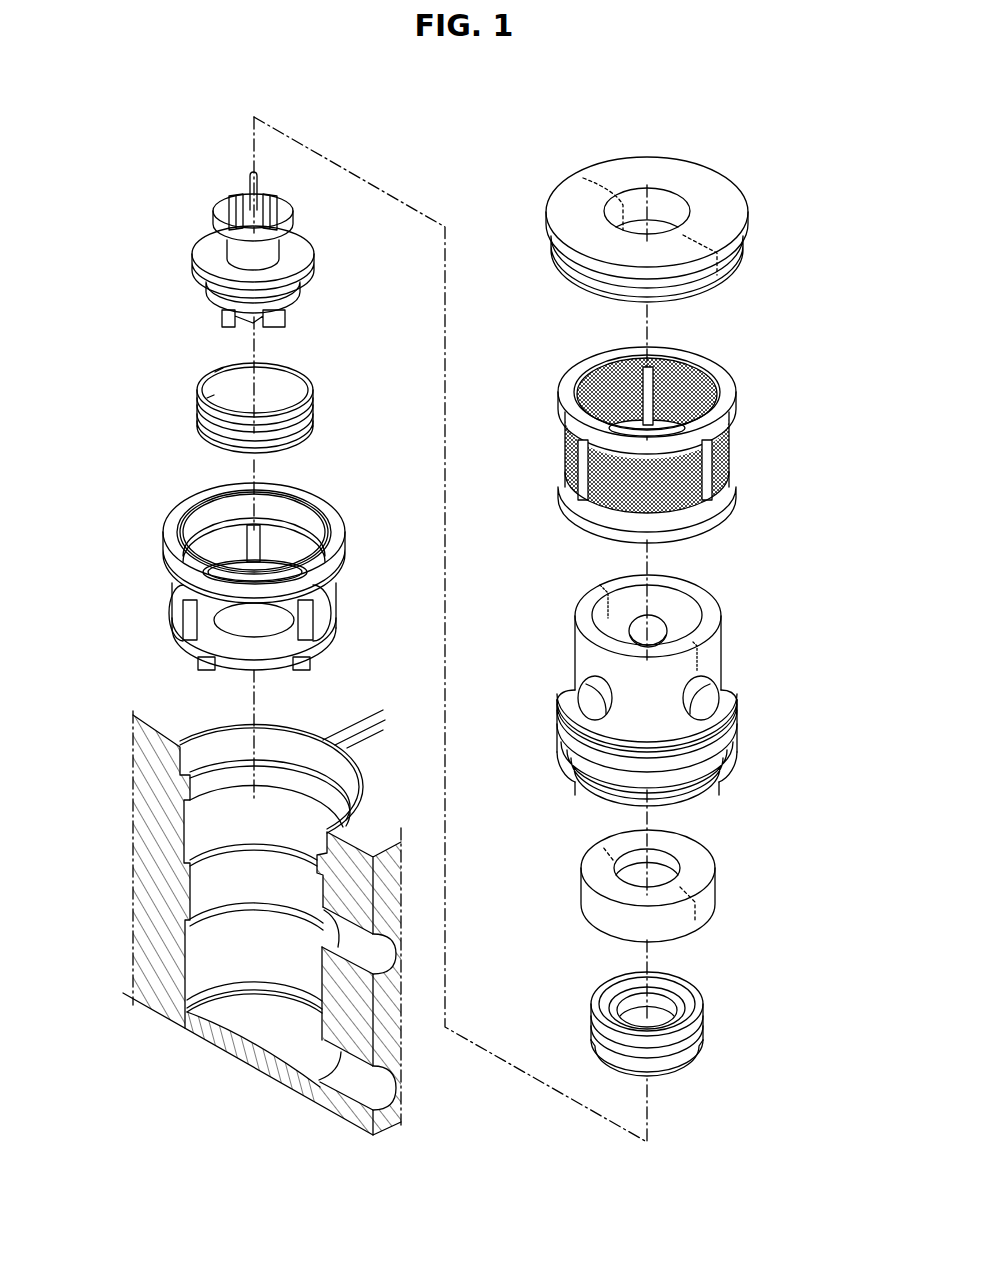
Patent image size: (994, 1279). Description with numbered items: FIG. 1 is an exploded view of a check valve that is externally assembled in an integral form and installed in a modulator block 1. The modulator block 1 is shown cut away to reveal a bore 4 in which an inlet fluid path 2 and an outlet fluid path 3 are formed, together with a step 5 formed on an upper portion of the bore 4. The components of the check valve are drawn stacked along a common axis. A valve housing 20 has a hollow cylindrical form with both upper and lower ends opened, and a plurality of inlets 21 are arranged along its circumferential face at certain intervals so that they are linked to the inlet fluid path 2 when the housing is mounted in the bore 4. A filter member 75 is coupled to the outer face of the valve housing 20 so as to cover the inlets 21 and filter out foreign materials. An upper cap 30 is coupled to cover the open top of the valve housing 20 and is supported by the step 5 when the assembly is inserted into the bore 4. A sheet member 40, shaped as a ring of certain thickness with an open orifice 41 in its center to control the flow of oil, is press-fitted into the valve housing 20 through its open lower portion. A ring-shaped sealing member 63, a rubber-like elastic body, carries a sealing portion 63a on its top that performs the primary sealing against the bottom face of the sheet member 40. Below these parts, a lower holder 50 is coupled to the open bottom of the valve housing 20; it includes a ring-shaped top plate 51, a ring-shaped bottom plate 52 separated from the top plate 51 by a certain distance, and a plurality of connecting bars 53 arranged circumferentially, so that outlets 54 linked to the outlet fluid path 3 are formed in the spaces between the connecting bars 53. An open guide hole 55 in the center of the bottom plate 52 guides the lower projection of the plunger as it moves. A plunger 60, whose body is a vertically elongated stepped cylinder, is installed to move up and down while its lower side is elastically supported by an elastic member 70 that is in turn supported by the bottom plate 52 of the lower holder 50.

The modulator block 1 is at (255, 910).
The inlet fluid path 2 is at (382, 950).
The outlet fluid path 3 is at (383, 1086).
The bore 4 is at (210, 818).
The step 5 is at (217, 765).
The valve housing 20 is at (675, 690).
The inlet 21 is at (706, 700).
The upper cap 30 is at (551, 177).
The sheet member 40 is at (669, 886).
The orifice 41 is at (661, 869).
The lower holder 50 is at (252, 582).
The top plate 51 is at (180, 514).
The bottom plate 52 is at (173, 630).
The connecting bar 53 is at (197, 612).
The outlet 54 is at (326, 605).
The guide hole 55 is at (258, 628).
The plunger 60 is at (194, 226).
The sealing member 63 is at (647, 1024).
The sealing portion 63a is at (698, 1000).
The elastic member 70 is at (205, 392).
The filter member 75 is at (550, 385).